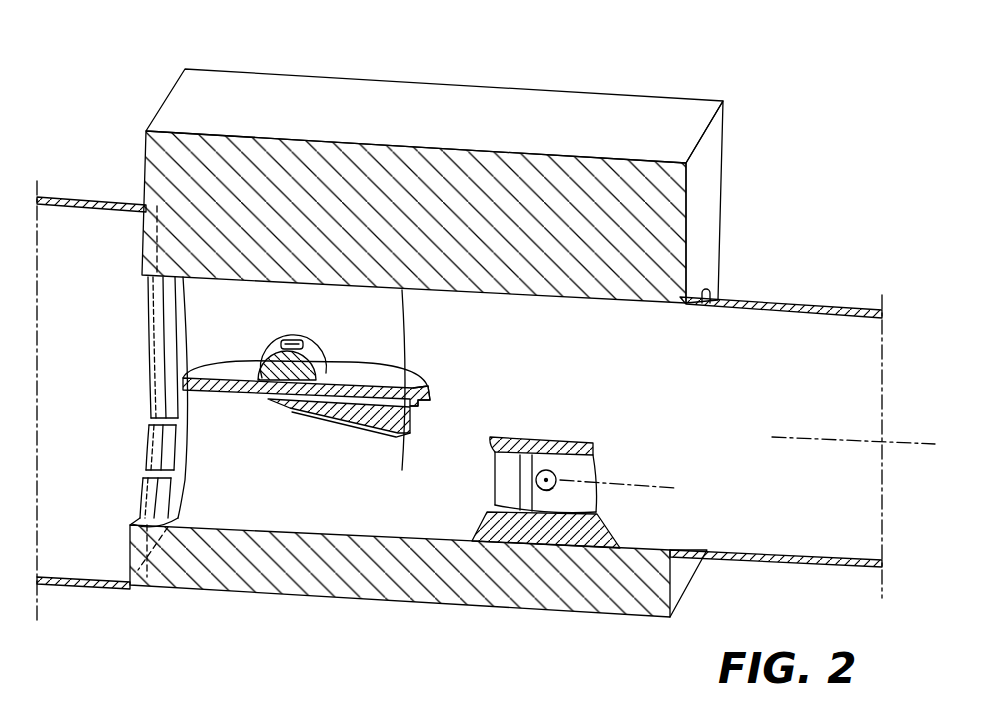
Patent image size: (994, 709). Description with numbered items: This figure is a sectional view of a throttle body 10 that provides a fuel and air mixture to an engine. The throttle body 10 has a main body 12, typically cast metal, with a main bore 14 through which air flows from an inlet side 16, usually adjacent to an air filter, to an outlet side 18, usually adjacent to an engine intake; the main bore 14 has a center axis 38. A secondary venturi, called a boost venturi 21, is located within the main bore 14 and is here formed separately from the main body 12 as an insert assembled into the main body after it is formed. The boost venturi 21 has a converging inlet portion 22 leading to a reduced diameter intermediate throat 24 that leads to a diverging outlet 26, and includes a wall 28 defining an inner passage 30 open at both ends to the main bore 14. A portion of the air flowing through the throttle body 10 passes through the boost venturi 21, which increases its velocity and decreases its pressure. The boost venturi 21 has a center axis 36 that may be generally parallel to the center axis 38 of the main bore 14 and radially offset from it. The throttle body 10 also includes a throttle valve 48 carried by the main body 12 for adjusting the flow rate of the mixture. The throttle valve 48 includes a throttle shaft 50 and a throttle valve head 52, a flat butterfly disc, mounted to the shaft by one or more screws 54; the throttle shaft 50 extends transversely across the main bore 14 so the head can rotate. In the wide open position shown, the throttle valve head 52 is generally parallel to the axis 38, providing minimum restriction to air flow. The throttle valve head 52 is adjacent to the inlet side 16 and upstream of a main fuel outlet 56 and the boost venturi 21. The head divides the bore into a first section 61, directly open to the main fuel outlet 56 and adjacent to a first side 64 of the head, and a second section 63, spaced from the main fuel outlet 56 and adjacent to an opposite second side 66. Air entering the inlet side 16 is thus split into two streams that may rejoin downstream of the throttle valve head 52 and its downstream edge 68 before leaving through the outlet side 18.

The throttle body 10 is at (752, 45).
The main body 12 is at (437, 107).
The main bore 14 is at (698, 515).
The inlet side 16 is at (142, 503).
The outlet side 18 is at (883, 342).
The boost venturi 21 is at (528, 575).
The converging inlet portion 22 is at (495, 495).
The intermediate throat 24 is at (487, 512).
The diverging outlet 26 is at (593, 475).
The wall 28 is at (535, 445).
The inner passage 30 is at (478, 473).
The center axis 36 is at (653, 487).
The center axis 38 is at (900, 443).
The throttle valve 48 is at (273, 424).
The throttle shaft 50 is at (296, 372).
The throttle valve head 52 is at (223, 392).
The screws 54 is at (290, 403).
The main fuel outlet 56 is at (548, 487).
The first section 61 is at (203, 482).
The second section 63 is at (198, 317).
The first side 64 is at (200, 408).
The second side 66 is at (217, 373).
The downstream edge 68 is at (430, 397).